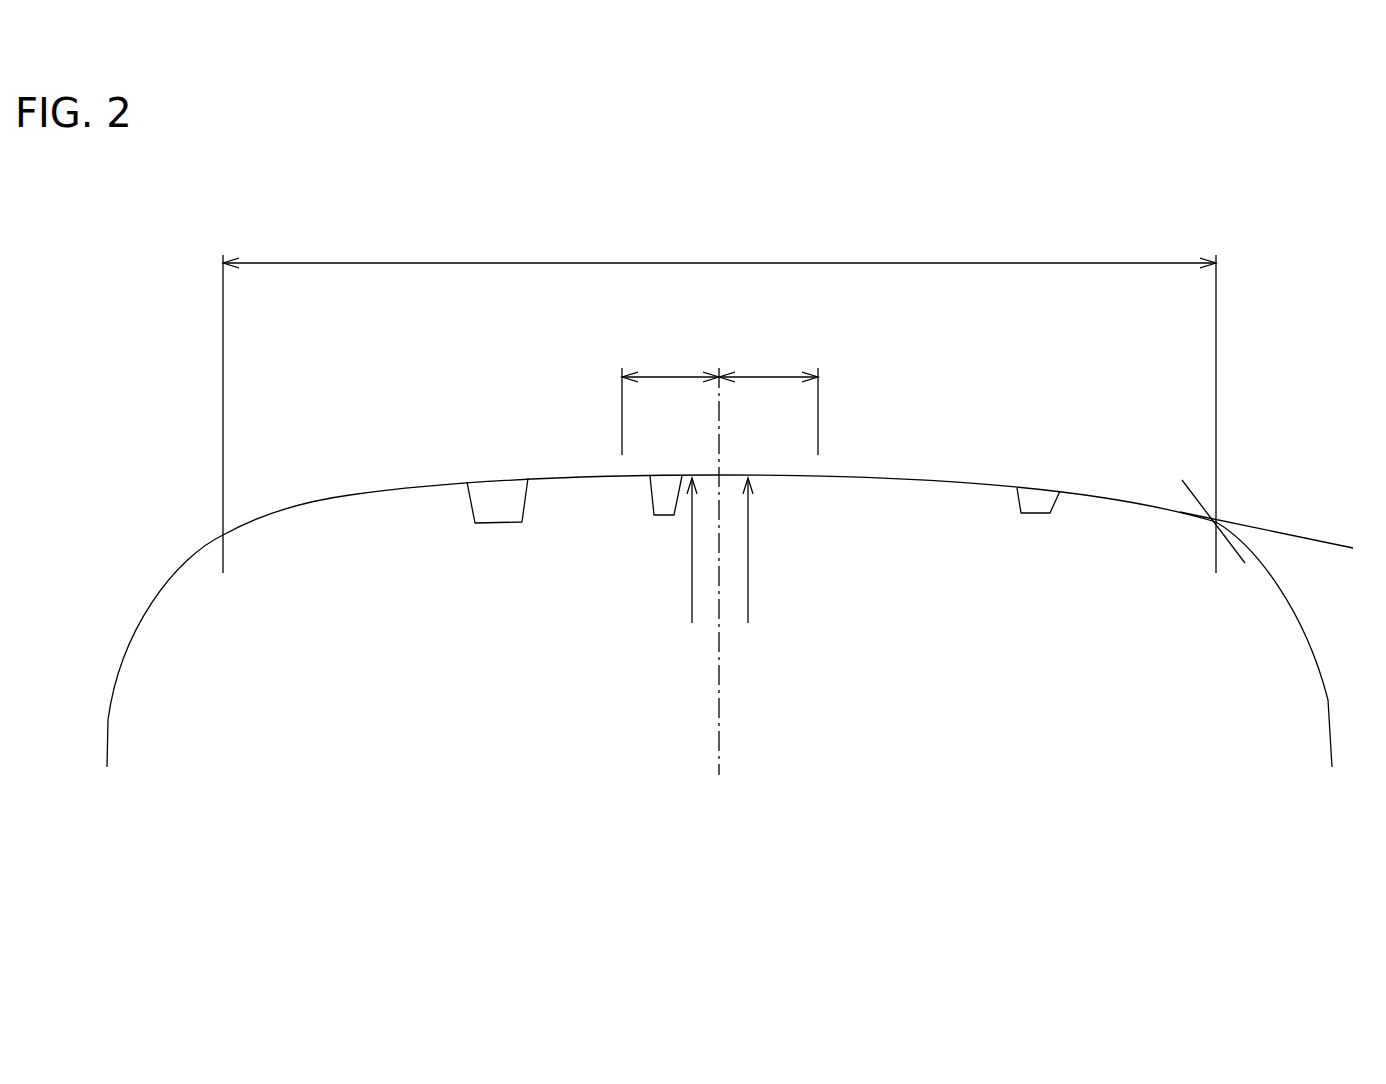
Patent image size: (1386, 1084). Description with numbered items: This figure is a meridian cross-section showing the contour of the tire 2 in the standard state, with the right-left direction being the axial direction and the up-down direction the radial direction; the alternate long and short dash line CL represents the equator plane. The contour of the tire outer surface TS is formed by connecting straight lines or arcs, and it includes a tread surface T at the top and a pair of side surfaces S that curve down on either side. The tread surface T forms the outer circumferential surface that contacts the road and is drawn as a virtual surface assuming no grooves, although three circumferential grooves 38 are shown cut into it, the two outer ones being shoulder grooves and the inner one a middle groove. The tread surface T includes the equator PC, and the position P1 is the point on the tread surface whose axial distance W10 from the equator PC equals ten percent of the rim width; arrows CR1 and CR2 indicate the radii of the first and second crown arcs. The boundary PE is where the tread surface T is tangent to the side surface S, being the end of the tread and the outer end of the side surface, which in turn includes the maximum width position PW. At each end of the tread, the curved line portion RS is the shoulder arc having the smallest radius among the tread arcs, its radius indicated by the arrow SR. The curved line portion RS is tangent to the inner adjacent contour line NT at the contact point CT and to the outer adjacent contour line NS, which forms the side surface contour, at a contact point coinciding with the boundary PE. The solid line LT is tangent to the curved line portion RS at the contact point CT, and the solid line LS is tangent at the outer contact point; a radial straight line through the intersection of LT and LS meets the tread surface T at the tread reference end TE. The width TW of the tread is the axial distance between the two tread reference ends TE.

The tire 2 is at (1310, 355).
The circumferential groove 38 is at (1038, 458).
The tread surface T is at (415, 481).
The side surface S is at (140, 630).
The width of the tread TW is at (719, 404).
The distance in the axial direction from the equator to position P1 W10 is at (720, 400).
The equator plane CL is at (725, 716).
The radius of the first crown arc CR1 is at (669, 550).
The radius of the second crown arc CR2 is at (769, 550).
The crown reference position P1 is at (850, 443).
The equator PC is at (720, 476).
The tire outer surface TS is at (948, 482).
The tangent line at contact point CS LS is at (1195, 482).
The tangent line at contact point CT LT is at (1333, 543).
The contact point CT is at (1120, 498).
The tread reference end TE is at (1257, 490).
The boundary between tread surface and side surface PE is at (170, 580).
The curved line portion RS is at (264, 517).
The radius of the shoulder arc SR is at (1206, 530).
The inner adjacent contour line NT is at (1072, 494).
The outer adjacent contour line NS is at (1292, 616).
The maximum width position PW is at (106, 745).